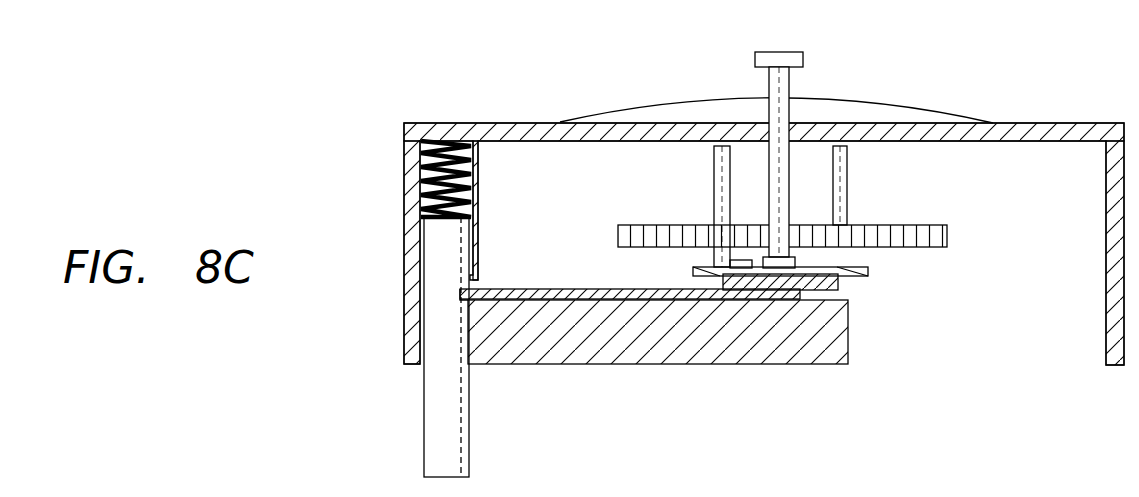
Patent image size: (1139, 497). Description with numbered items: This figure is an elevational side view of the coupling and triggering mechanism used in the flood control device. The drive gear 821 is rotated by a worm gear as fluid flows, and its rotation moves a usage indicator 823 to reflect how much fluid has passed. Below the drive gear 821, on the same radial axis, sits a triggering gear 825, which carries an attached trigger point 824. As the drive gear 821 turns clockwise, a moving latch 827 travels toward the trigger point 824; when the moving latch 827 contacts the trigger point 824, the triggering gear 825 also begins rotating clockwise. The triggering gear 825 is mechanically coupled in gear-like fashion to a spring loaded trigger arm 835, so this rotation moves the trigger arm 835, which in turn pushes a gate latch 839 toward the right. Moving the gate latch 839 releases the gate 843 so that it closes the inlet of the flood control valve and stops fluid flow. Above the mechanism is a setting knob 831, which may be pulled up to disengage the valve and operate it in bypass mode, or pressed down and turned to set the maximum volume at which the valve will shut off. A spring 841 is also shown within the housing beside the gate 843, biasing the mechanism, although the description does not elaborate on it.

The drive gear 821 is at (945, 226).
The usage indicator 823 is at (847, 158).
The trigger point 824 is at (713, 207).
The triggering gear 825 is at (868, 269).
The moving latch 827 is at (873, 240).
The setting knob 831 is at (757, 57).
The spring loaded trigger arm 835 is at (840, 291).
The gate latch 839 is at (510, 300).
The spring 841 is at (425, 176).
The gate 843 is at (437, 440).